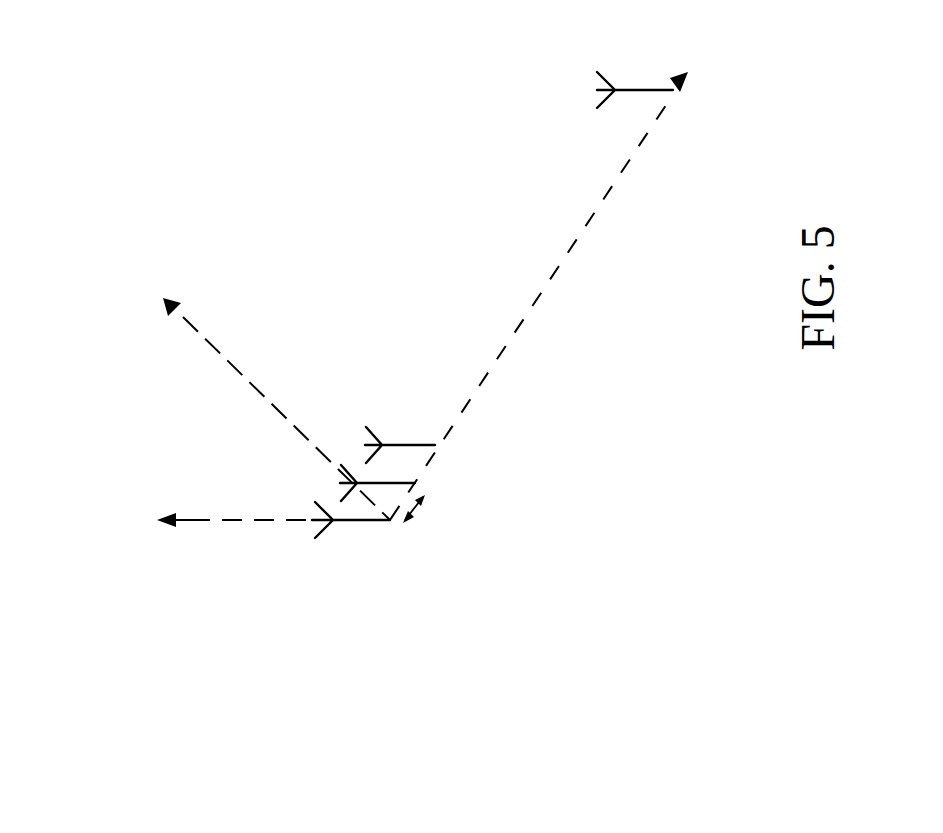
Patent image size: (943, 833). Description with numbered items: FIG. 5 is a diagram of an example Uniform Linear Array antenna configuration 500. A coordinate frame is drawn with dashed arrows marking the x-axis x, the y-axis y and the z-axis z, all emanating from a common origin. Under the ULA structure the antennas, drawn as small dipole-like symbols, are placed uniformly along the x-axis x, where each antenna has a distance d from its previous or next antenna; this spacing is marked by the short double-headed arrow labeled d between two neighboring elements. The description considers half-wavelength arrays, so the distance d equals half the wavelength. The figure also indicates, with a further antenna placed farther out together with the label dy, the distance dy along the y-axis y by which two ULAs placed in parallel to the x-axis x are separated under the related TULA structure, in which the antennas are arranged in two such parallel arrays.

The Uniform Linear Array antenna configuration 500 is at (127, 693).
The x-axis x is at (550, 288).
The y-axis y is at (263, 401).
The z-axis z is at (259, 520).
The antenna distance d is at (424, 509).
The distance along the y-axis dy is at (635, 82).